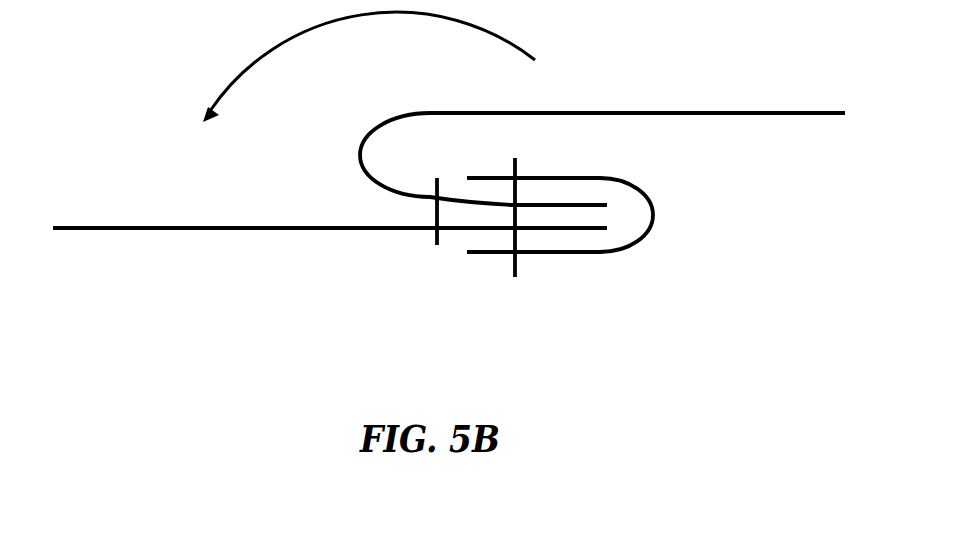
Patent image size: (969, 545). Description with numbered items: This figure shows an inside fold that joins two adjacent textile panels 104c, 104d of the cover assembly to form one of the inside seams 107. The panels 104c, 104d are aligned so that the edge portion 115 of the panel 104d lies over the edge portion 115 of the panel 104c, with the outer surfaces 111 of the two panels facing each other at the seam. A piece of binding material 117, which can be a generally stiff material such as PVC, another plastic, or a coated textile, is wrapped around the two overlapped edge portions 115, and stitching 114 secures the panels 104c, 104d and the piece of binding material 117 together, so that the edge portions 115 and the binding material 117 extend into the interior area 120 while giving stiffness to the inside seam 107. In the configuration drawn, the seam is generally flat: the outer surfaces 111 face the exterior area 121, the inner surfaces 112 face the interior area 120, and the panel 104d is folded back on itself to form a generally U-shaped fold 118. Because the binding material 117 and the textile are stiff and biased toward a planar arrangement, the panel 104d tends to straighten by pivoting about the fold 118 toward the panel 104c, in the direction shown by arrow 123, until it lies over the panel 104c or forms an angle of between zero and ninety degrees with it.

The panel 104c is at (140, 231).
The panel 104d is at (645, 110).
The inside seam 107 is at (708, 259).
The outer surface 111 is at (292, 213).
The inner surface 112 is at (222, 244).
The stitching 114 is at (437, 245).
The edge portion 115 is at (607, 227).
The piece of binding material 117 is at (638, 238).
The U-shaped fold 118 is at (362, 150).
The interior area 120 is at (603, 369).
The exterior area 121 is at (131, 139).
The arrow 123 is at (237, 80).